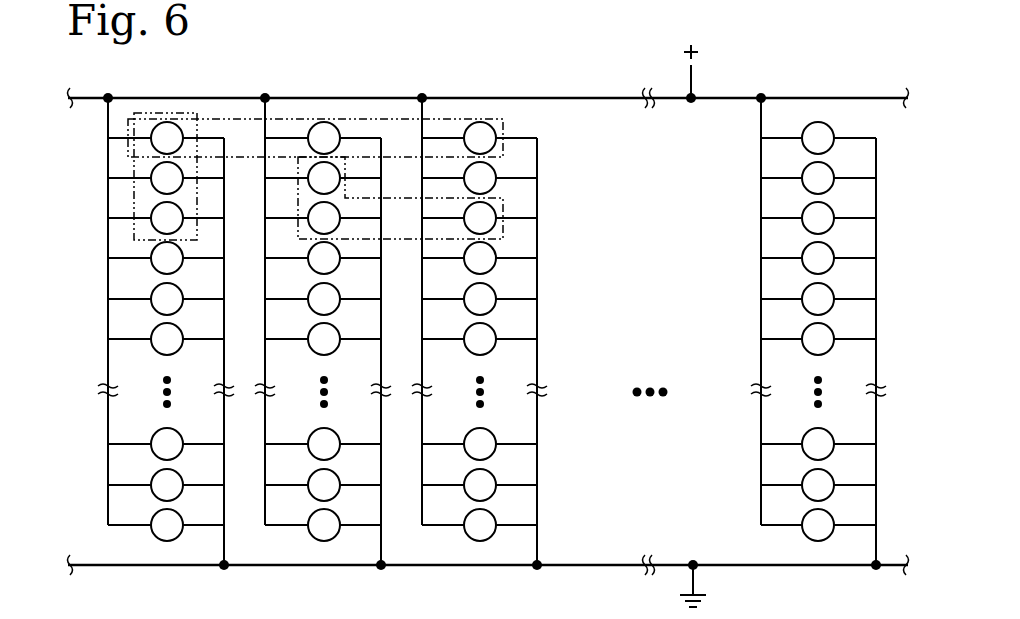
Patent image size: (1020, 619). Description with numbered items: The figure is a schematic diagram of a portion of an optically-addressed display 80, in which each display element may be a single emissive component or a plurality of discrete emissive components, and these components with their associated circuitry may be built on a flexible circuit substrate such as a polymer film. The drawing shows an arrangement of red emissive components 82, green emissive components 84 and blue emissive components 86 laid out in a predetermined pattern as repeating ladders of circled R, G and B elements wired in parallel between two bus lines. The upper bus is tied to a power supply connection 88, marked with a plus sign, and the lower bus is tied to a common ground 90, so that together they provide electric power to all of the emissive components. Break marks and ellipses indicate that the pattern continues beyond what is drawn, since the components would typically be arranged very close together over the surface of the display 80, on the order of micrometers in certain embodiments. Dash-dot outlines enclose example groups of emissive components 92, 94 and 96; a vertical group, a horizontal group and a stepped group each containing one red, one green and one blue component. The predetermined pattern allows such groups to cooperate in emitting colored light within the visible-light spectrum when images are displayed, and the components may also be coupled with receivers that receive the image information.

The display 80 is at (541, 48).
The red emissive components 82 is at (154, 436).
The green emissive components 84 is at (154, 477).
The blue emissive components 86 is at (154, 517).
The power supply connection 88 is at (693, 80).
The common ground 90 is at (695, 572).
The group of emissive components 92 is at (133, 170).
The group of emissive components 94 is at (292, 115).
The group of emissive components 96 is at (506, 205).